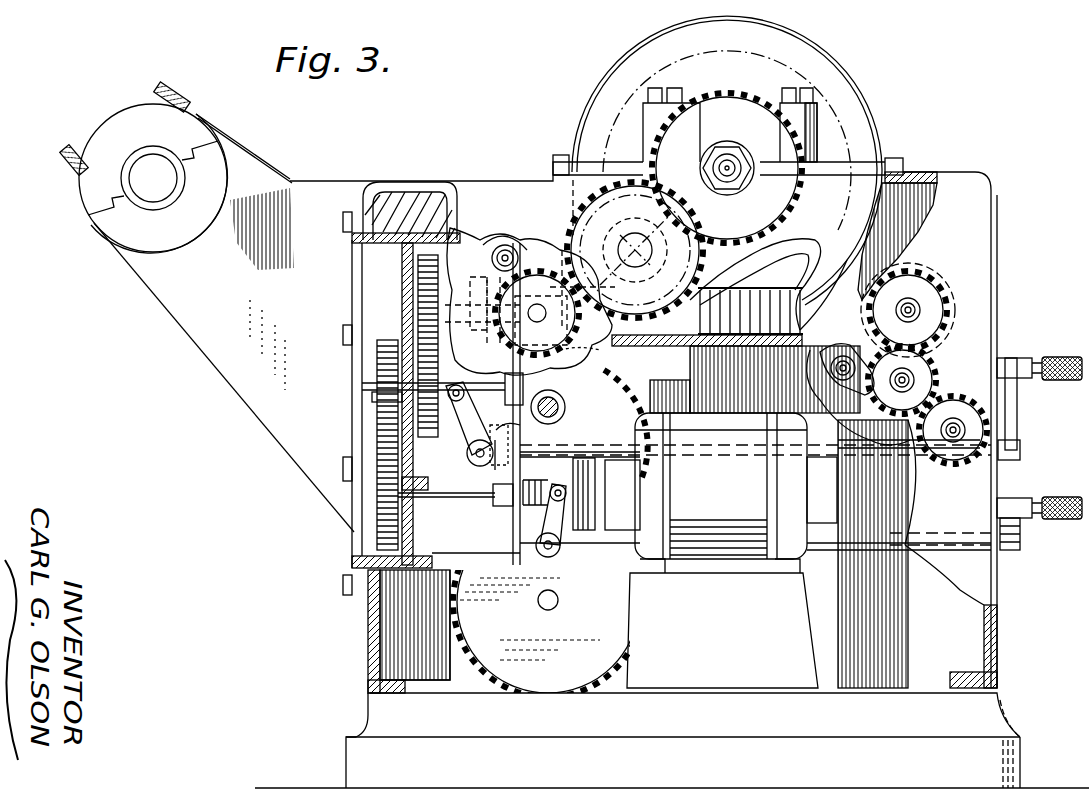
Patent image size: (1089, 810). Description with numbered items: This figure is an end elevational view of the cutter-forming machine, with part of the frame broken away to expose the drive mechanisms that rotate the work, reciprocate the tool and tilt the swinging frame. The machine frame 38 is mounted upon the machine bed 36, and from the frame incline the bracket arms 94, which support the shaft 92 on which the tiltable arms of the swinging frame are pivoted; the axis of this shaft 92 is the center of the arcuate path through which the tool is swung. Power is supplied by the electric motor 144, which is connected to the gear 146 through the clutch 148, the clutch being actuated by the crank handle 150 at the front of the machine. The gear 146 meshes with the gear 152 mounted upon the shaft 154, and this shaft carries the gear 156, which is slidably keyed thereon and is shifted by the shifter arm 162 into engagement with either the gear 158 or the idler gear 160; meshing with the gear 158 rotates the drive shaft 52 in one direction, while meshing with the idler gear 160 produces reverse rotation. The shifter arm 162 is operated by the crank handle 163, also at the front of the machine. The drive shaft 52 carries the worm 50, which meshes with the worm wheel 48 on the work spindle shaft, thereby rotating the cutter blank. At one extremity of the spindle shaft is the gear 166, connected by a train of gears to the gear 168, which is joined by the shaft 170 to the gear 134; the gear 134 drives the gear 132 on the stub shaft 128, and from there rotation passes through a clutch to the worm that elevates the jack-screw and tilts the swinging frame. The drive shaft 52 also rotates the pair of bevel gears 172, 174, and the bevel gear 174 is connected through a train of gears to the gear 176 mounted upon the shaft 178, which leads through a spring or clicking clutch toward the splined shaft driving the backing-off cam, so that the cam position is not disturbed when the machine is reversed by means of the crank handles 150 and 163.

The machine bed 36 is at (373, 727).
The machine frame 38 is at (368, 617).
The worm wheel 48 is at (843, 114).
The worm 50 is at (762, 265).
The drive shaft 52 is at (800, 286).
The shaft 92 is at (152, 178).
The bracket arms 94 is at (246, 362).
The stub shaft 128 is at (558, 600).
The gear 132 is at (513, 657).
The gear 134 is at (712, 372).
The electric motor 144 is at (720, 542).
The gear 146 is at (388, 522).
The clutch 148 is at (552, 500).
The crank handle 150 is at (1070, 486).
The gear 152 is at (392, 402).
The shaft 154 is at (392, 383).
The gear 156 is at (472, 456).
The gear 158 is at (425, 268).
The idler gear 160 is at (505, 246).
The shifter arm 162 is at (497, 422).
The crank handle 163 is at (1058, 360).
The gear 166 is at (722, 110).
The gear 168 is at (610, 356).
The shaft 170 is at (566, 405).
The bevel gear 172 is at (880, 272).
The bevel gear 174 is at (932, 286).
The gear 176 is at (962, 456).
The shaft 178 is at (955, 428).